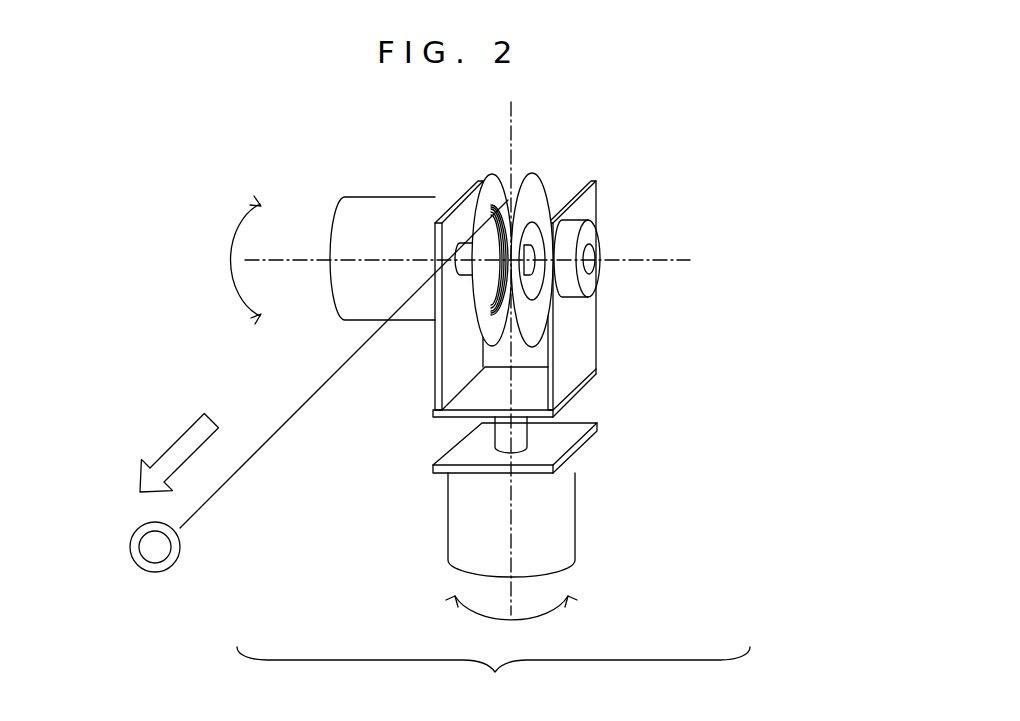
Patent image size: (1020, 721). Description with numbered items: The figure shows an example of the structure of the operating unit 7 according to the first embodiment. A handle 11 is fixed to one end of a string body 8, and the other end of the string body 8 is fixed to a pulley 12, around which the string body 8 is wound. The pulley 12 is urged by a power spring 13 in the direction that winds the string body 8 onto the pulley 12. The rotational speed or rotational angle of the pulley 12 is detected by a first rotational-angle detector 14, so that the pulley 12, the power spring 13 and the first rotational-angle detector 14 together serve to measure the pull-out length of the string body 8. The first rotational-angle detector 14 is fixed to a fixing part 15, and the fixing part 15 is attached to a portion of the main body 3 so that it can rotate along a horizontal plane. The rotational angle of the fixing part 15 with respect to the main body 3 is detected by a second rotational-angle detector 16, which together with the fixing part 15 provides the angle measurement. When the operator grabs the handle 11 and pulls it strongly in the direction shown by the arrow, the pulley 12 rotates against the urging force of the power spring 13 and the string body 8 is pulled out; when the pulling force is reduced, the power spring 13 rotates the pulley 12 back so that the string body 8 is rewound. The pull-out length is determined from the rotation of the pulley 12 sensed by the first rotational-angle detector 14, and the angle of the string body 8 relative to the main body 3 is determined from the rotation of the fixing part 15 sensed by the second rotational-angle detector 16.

The main body 3 is at (570, 432).
The operating unit 7 is at (493, 676).
The string body 8 is at (255, 450).
The handle 11 is at (157, 557).
The pulley 12 is at (533, 180).
The power spring 13 is at (597, 232).
The first rotational-angle detector 14 is at (385, 228).
The fixing part 15 is at (575, 337).
The second rotational-angle detector 16 is at (560, 525).